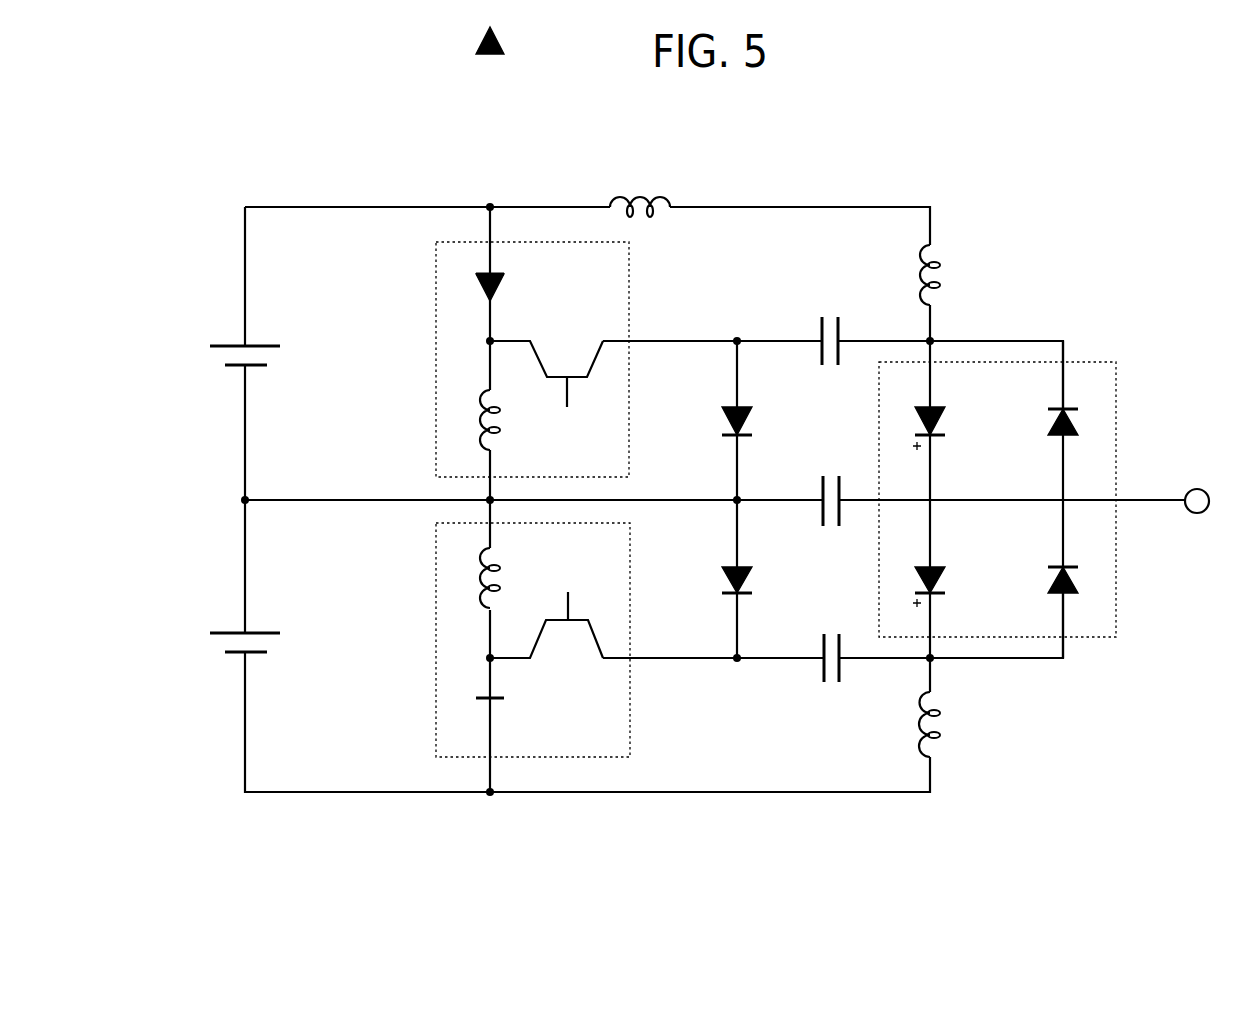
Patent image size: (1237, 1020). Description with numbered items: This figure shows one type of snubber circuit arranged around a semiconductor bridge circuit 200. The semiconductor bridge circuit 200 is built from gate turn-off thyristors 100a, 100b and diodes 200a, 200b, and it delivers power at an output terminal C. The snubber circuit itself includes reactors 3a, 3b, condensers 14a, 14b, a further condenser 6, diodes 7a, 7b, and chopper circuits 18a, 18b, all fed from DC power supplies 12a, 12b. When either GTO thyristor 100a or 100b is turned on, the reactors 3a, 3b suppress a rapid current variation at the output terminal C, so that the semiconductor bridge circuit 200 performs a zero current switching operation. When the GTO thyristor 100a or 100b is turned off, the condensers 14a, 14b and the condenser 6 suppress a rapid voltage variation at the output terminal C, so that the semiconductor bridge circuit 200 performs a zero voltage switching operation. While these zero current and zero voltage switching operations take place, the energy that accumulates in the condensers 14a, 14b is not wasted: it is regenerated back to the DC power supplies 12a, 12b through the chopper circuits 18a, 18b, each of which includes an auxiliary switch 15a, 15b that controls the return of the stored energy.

The DC power supply 12a is at (225, 344).
The DC power supply 12b is at (225, 631).
The chopper circuit 18a is at (492, 359).
The chopper circuit 18b is at (492, 392).
The auxiliary switch 15a is at (567, 352).
The auxiliary switch 15b is at (567, 648).
The condenser 14a is at (832, 320).
The condenser 14b is at (832, 633).
The condenser 6 is at (832, 483).
The diode 7a is at (726, 418).
The diode 7b is at (726, 576).
The reactor 3a is at (942, 281).
The reactor 3b is at (942, 731).
The semiconductor bridge circuit 200 is at (1016, 486).
The diode 200a is at (1052, 420).
The diode 200b is at (1052, 582).
The gate turn-off (GTO) thyristor 100a is at (942, 422).
The gate turn-off (GTO) thyristor 100b is at (942, 582).
The output terminal C is at (1198, 488).